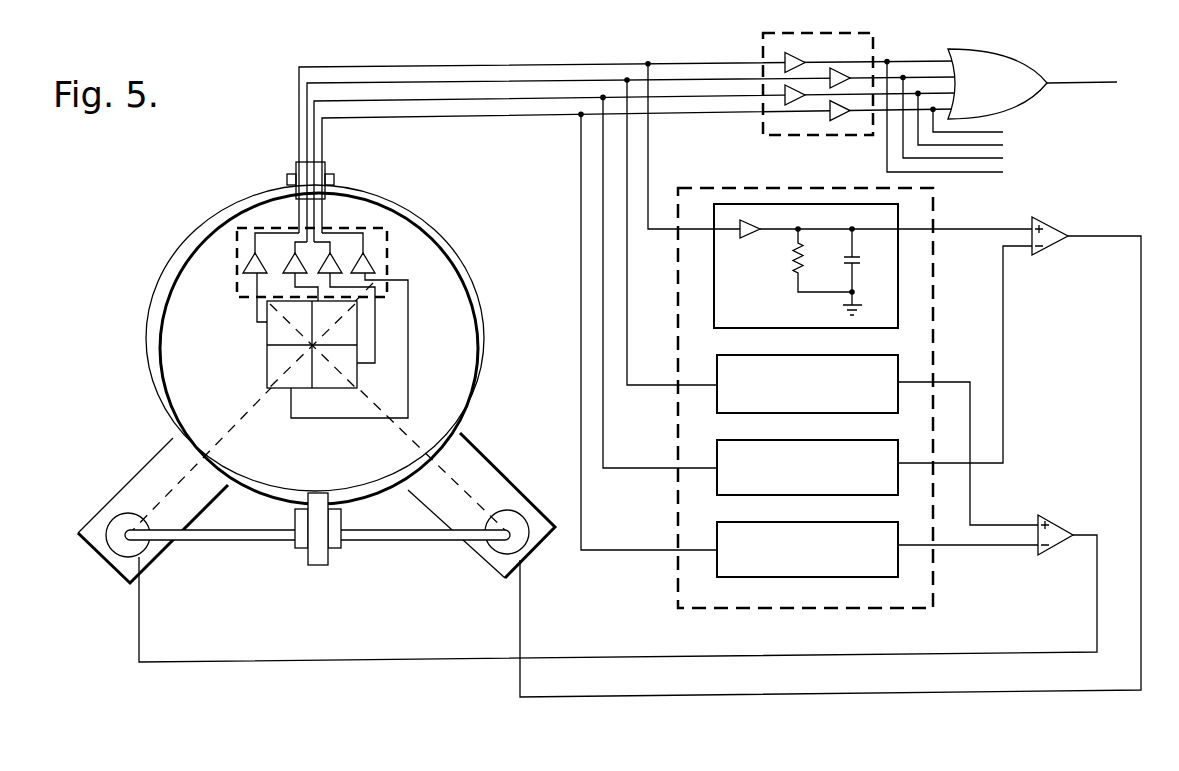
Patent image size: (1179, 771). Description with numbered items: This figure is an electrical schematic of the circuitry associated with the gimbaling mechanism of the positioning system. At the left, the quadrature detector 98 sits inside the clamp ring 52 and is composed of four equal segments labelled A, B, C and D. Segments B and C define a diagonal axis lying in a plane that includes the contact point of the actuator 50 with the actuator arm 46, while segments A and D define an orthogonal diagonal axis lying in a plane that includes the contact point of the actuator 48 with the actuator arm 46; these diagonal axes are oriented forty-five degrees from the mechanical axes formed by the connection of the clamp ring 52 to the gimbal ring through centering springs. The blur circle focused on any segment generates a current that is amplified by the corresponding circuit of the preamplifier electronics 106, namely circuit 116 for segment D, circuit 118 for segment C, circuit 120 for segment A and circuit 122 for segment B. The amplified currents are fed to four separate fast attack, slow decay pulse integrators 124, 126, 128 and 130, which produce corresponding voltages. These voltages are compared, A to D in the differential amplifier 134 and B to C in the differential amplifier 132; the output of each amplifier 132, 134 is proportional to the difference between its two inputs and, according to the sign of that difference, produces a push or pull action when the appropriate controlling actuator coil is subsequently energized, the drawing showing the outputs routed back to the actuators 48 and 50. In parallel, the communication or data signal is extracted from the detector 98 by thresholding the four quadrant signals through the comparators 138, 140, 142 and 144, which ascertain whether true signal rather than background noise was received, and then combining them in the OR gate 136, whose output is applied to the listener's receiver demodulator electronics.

The actuator arm 46 is at (422, 542).
The actuator 48 is at (157, 562).
The actuator 50 is at (532, 548).
The clamp ring 52 is at (180, 253).
The quadrature detector 98 is at (267, 340).
The preamplifier electronics 106 is at (236, 287).
The preamplifier circuit 116 is at (377, 261).
The preamplifier circuit 118 is at (336, 262).
The preamplifier circuit 120 is at (293, 274).
The preamplifier circuit 122 is at (244, 262).
The pulse integrator 124 is at (900, 303).
The pulse integrator 126 is at (900, 367).
The pulse integrator 128 is at (813, 438).
The pulse integrator 130 is at (818, 521).
The differential amplifier 132 is at (1053, 229).
The differential amplifier 134 is at (1058, 523).
The OR gate 136 is at (1020, 63).
The comparator 138 is at (797, 52).
The comparator 140 is at (853, 62).
The comparator 142 is at (775, 107).
The comparator 144 is at (838, 114).